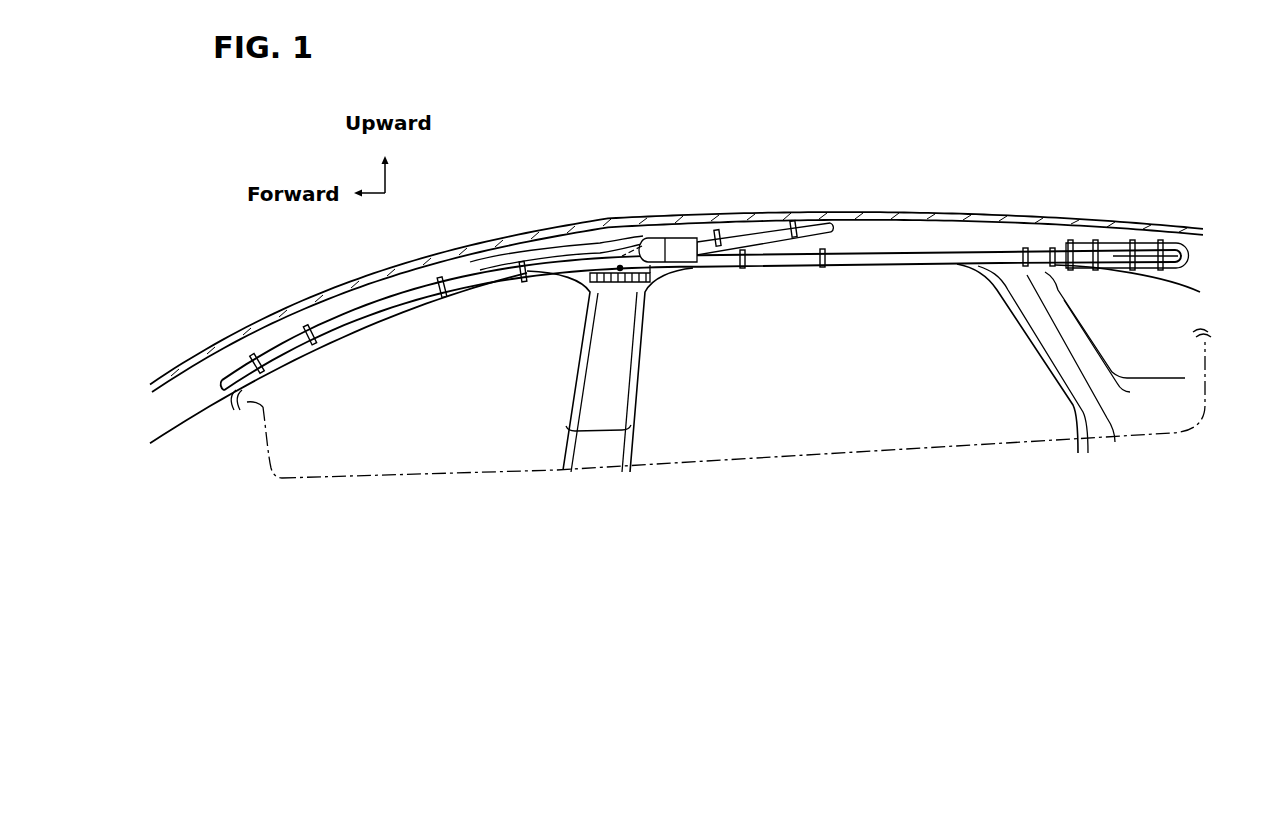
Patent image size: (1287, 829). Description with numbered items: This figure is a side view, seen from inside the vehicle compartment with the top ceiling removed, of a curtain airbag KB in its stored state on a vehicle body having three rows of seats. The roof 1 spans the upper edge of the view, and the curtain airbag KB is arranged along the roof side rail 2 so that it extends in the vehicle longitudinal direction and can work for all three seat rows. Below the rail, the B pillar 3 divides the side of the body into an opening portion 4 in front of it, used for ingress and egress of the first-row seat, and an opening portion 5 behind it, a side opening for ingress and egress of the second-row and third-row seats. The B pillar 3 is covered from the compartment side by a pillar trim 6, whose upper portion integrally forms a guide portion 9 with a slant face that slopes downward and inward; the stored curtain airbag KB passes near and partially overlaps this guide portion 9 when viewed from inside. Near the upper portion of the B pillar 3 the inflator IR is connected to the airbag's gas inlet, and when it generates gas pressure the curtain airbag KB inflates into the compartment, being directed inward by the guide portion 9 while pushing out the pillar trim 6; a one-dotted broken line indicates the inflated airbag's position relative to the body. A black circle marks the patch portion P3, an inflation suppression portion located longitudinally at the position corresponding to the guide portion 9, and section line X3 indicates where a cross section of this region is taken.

The roof 1 is at (945, 222).
The roof side rail 2 is at (575, 250).
The B pillar 3 is at (588, 402).
The opening portion 4 is at (417, 377).
The opening portion 5 is at (835, 363).
The pillar trim 6 is at (592, 392).
The guide portion 9 is at (567, 324).
The curtain airbag KB is at (477, 273).
The inflator IR is at (750, 237).
The patch portion P3 is at (567, 286).
The section line X3 is at (620, 343).